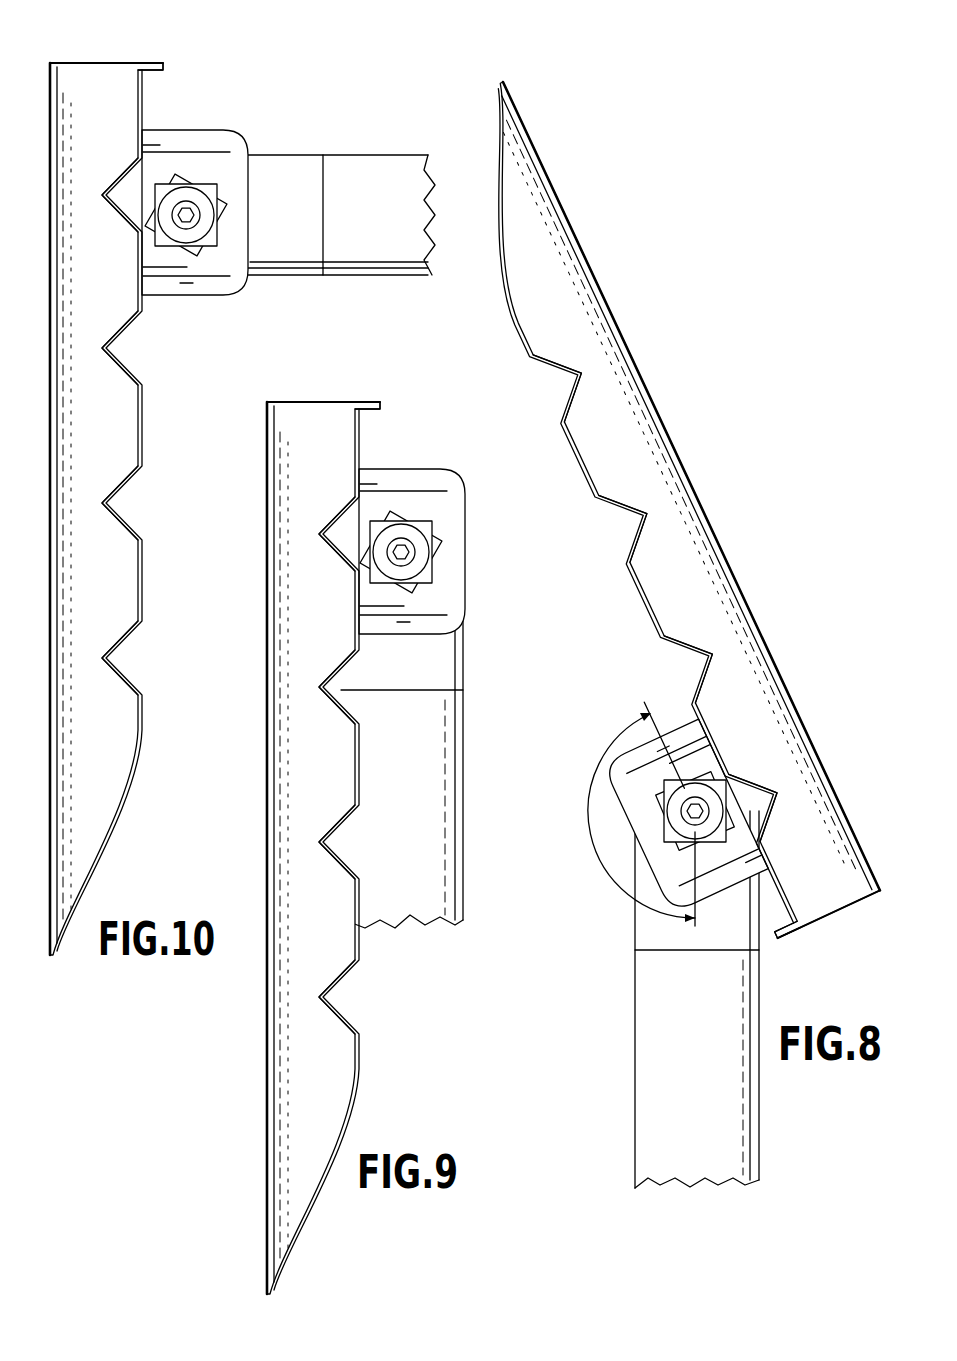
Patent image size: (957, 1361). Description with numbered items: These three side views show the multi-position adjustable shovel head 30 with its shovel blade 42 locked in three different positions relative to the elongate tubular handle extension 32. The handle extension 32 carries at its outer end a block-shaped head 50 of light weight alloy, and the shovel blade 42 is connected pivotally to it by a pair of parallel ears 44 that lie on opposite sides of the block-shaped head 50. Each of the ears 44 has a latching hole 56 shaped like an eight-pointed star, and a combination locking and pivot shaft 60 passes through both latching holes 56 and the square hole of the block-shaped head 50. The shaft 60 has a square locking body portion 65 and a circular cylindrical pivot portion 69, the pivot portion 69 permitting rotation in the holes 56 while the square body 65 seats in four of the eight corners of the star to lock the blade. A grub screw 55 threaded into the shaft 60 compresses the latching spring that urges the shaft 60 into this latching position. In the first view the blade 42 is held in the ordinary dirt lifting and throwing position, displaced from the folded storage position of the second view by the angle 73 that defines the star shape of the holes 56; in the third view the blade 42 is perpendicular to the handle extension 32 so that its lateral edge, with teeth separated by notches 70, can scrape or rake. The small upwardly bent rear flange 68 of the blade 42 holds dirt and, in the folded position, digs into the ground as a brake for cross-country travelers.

In FIG. 10, the multi-position adjustable shovel head 30 is at (242, 481).
In FIG. 9, the multi-position adjustable shovel head 30 is at (375, 817).
In FIG. 8, the multi-position adjustable shovel head 30 is at (640, 635).
In FIG. 10, the handle extension 32 is at (390, 155).
In FIG. 9, the handle extension 32 is at (464, 719).
In FIG. 8, the handle extension 32 is at (635, 1029).
In FIG. 10, the shovel blade 42 is at (92, 848).
In FIG. 9, the shovel blade 42 is at (280, 1123).
In FIG. 8, the shovel blade 42 is at (765, 653).
In FIG. 10, the ears 44 is at (232, 276).
In FIG. 9, the ears 44 is at (446, 486).
In FIG. 8, the ears 44 is at (686, 731).
In FIG. 10, the block-shaped head 50 is at (296, 155).
In FIG. 9, the block-shaped head 50 is at (464, 664).
In FIG. 8, the block-shaped head 50 is at (635, 920).
In FIG. 9, the grub screw 55 is at (408, 538).
In FIG. 10, the latching holes 56 is at (197, 256).
In FIG. 9, the latching holes 56 is at (441, 548).
In FIG. 8, the latching holes 56 is at (704, 767).
In FIG. 10, the combination locking and pivot shaft 60 is at (228, 187).
In FIG. 8, the combination locking and pivot shaft 60 is at (655, 840).
In FIG. 10, the square locking body portion 65 is at (222, 240).
In FIG. 9, the square locking body portion 65 is at (436, 524).
In FIG. 8, the square locking body portion 65 is at (735, 786).
In FIG. 10, the rear flange 68 is at (152, 62).
In FIG. 9, the rear flange 68 is at (368, 402).
In FIG. 8, the rear flange 68 is at (801, 934).
In FIG. 10, the circular cylindrical pivot portion 69 is at (185, 190).
In FIG. 9, the circular cylindrical pivot portion 69 is at (422, 563).
In FIG. 8, the circular cylindrical pivot portion 69 is at (722, 813).
In FIG. 10, the notches 70 is at (131, 358).
In FIG. 9, the notches 70 is at (342, 1010).
In FIG. 8, the notches 70 is at (645, 506).
In FIG. 8, the angle 73 is at (600, 758).